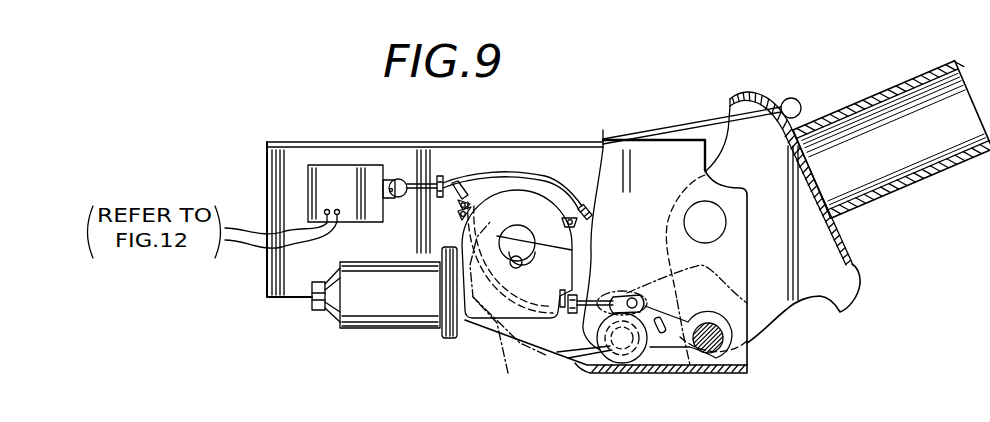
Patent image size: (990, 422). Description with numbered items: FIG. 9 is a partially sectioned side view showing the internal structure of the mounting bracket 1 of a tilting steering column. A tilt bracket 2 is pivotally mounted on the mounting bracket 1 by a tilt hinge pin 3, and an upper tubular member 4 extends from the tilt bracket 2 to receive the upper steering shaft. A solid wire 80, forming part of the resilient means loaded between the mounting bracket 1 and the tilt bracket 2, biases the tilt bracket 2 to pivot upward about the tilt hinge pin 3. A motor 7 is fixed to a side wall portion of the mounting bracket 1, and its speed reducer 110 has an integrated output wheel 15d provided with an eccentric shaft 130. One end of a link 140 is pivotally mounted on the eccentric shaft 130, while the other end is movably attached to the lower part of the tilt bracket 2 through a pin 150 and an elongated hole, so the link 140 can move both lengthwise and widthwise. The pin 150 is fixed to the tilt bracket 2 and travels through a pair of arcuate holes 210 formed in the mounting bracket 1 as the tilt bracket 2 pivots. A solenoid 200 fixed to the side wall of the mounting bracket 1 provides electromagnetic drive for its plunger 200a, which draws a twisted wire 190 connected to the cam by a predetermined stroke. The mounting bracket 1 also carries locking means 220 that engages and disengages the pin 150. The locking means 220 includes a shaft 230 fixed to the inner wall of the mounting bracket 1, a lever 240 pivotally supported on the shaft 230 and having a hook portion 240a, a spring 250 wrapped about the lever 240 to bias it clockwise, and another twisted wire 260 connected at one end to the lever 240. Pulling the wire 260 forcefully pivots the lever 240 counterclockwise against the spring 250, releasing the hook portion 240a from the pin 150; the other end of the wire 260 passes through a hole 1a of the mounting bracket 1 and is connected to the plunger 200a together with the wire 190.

The mounting bracket 1 is at (437, 156).
The hole 1a is at (463, 186).
The tilt bracket 2 is at (745, 95).
The tilt hinge pin 3 is at (708, 228).
The upper tubular member 4 is at (852, 106).
The motor 7 is at (397, 313).
The output wheel 15d is at (522, 236).
The solid wire 80 is at (660, 128).
The speed reducer 110 is at (515, 198).
The eccentric shaft 130 is at (515, 268).
The link 140 is at (510, 297).
The pin 150 is at (717, 352).
The twisted wire 190 is at (417, 177).
The solenoid 200 is at (335, 165).
The plunger 200a is at (397, 197).
The arcuate hole 210 is at (660, 340).
The locking means 220 is at (634, 284).
The shaft 230 is at (620, 335).
The lever 240 is at (665, 338).
The hook portion 240a is at (733, 330).
The spring 250 is at (585, 364).
The twisted wire 260 is at (600, 293).